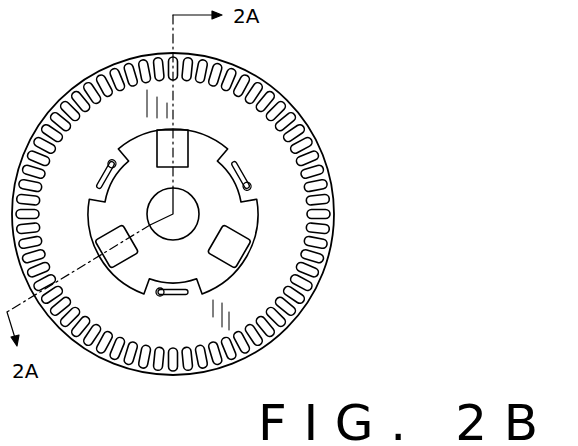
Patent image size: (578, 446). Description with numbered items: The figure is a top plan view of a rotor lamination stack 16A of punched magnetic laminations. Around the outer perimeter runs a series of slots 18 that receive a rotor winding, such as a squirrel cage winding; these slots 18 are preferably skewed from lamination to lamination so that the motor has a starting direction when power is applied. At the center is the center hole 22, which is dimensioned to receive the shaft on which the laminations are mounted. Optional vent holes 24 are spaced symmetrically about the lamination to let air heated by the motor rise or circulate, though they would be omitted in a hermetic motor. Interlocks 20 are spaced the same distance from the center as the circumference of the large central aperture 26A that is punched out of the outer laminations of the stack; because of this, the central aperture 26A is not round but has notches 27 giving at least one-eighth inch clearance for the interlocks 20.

The lamination stack 16A is at (248, 72).
The slots 18 is at (330, 173).
The interlocks 20 is at (243, 171).
The center hole 22 is at (192, 197).
The vent holes 24 is at (250, 256).
The central aperture 26A is at (138, 135).
The notches 27 is at (193, 283).